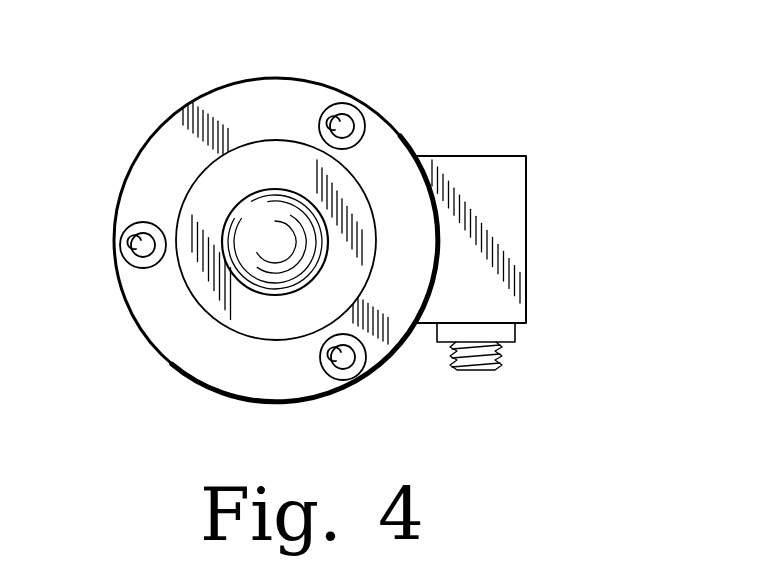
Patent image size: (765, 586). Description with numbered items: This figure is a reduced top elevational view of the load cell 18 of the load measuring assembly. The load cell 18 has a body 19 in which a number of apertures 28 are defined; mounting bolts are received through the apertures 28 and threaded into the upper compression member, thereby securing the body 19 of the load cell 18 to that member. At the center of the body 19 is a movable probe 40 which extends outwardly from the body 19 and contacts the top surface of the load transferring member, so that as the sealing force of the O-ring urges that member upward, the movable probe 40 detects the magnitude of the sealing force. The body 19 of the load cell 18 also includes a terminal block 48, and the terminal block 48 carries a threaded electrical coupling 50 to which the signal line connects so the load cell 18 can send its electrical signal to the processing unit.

The load cell 18 is at (468, 58).
The body 19 is at (288, 88).
The apertures 28 is at (138, 248).
The movable probe 40 is at (252, 213).
The terminal block 48 is at (513, 206).
The threaded electrical coupling 50 is at (497, 369).